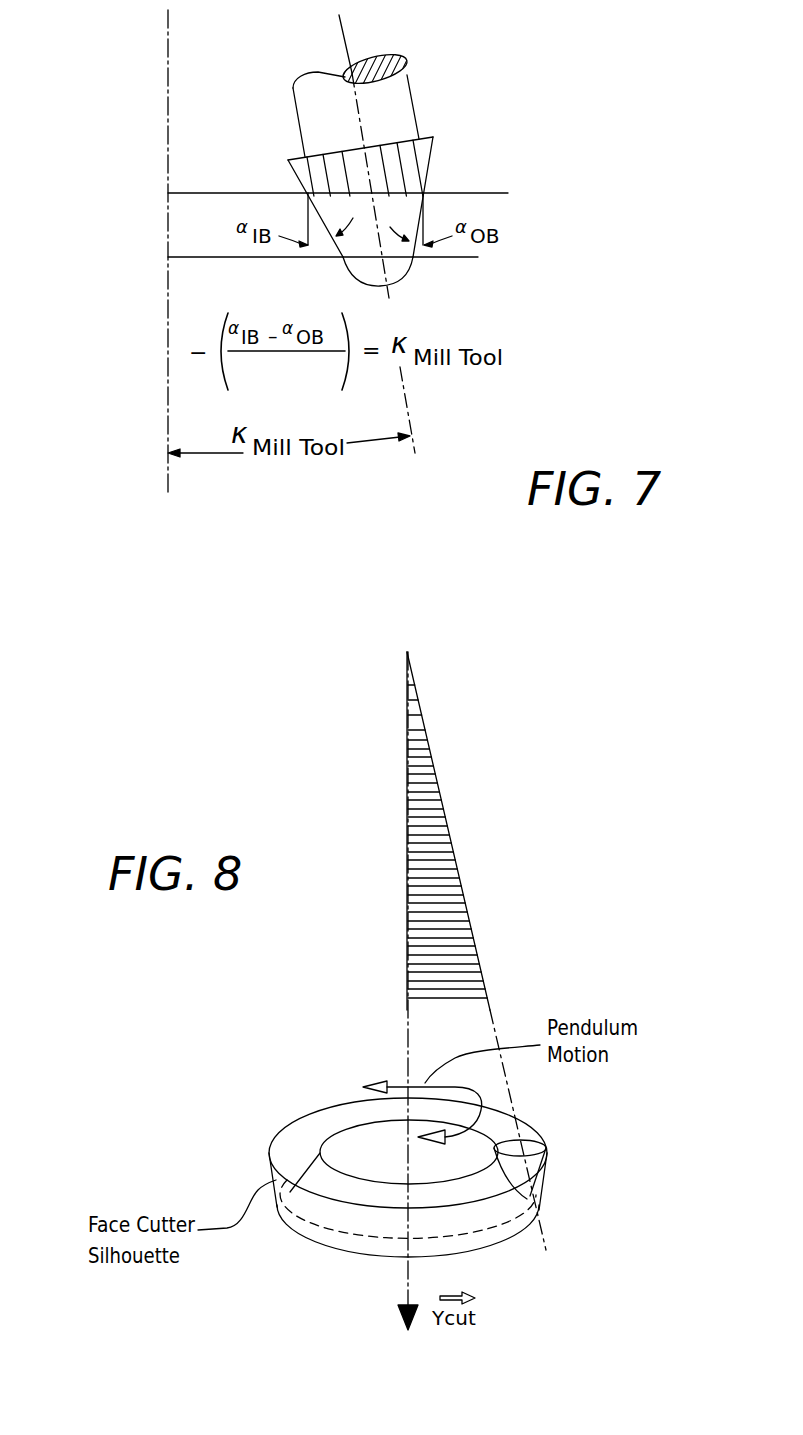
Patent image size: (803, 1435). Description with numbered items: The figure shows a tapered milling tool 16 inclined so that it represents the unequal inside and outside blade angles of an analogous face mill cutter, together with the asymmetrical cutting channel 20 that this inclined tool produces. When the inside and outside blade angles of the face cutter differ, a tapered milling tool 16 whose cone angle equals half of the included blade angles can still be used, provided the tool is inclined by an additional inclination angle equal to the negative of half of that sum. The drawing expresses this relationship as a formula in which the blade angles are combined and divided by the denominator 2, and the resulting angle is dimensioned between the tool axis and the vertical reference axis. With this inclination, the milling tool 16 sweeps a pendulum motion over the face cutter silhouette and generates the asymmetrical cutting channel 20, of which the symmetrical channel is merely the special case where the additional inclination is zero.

In FIG. 7, the milling tool 16 is at (428, 125).
In FIG. 8, the milling tool 16 is at (538, 1163).
In FIG. 8, the asymmetrical cutting channel 20 is at (307, 1140).
In FIG. 7, the denominator of the tilt angle formula (not a component) 2 is at (276, 378).